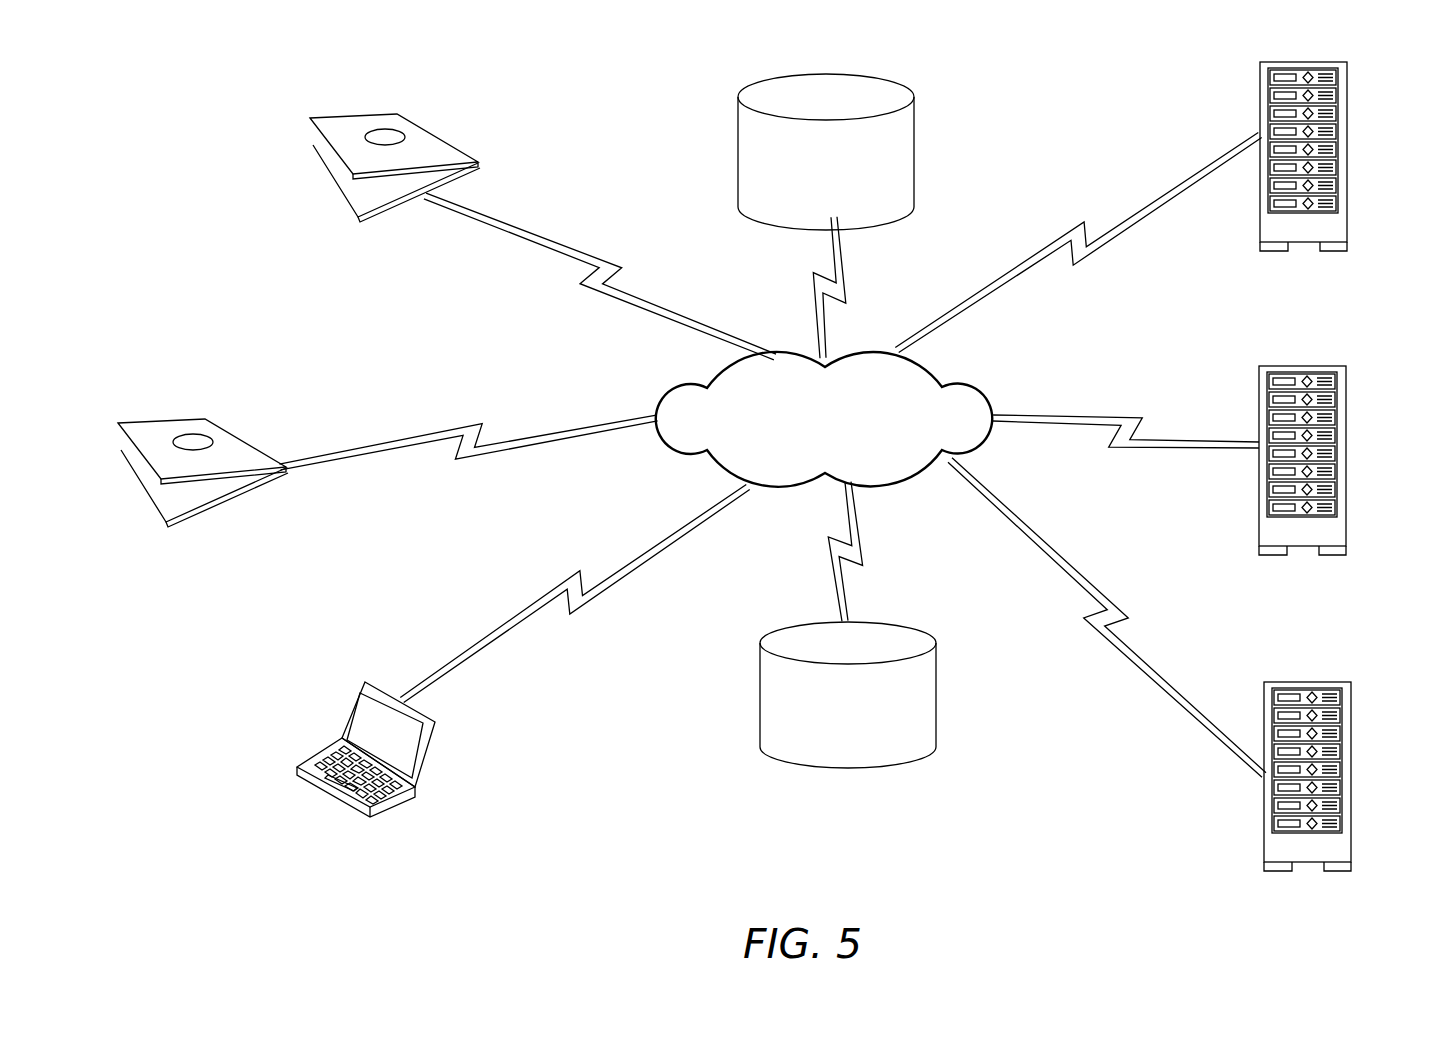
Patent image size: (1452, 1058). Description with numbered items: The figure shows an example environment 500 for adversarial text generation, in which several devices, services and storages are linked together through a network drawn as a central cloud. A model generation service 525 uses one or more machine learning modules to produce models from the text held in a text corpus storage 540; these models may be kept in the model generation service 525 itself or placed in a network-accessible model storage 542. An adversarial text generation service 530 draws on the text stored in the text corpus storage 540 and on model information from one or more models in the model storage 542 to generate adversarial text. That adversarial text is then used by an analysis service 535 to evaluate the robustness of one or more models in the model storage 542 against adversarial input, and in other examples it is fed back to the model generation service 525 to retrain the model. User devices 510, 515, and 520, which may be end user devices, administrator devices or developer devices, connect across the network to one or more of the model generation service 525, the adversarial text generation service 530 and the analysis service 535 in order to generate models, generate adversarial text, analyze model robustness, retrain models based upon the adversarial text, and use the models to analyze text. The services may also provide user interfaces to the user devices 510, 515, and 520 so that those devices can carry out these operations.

The example environment 500 is at (200, 88).
The user device 510 is at (357, 115).
The user device 515 is at (199, 422).
The user device 520 is at (364, 682).
The model generation service 525 is at (1259, 70).
The adversarial text generation service 530 is at (1278, 367).
The analysis service 535 is at (1272, 682).
The text corpus storage 540 is at (822, 74).
The model storage 542 is at (873, 768).